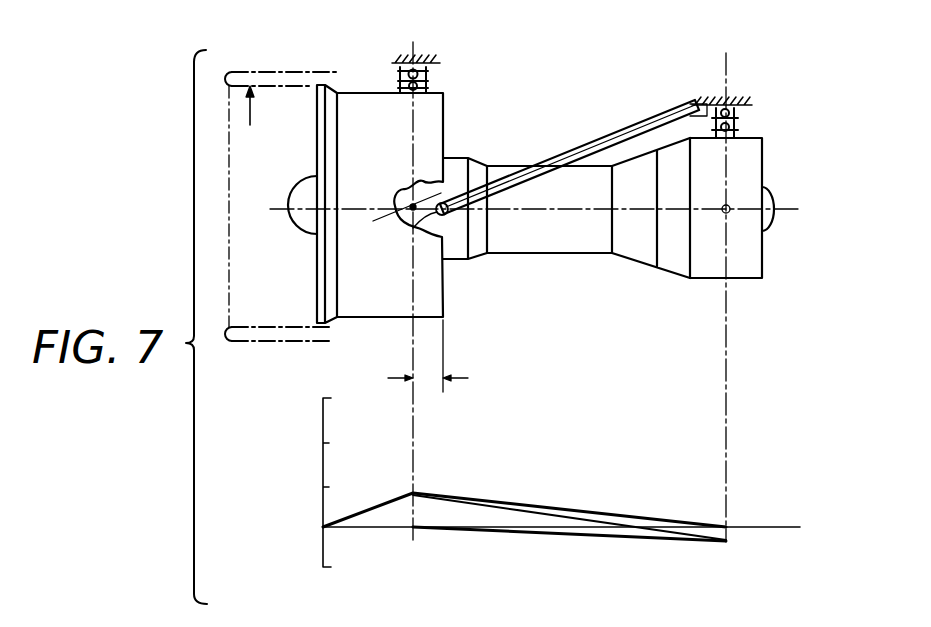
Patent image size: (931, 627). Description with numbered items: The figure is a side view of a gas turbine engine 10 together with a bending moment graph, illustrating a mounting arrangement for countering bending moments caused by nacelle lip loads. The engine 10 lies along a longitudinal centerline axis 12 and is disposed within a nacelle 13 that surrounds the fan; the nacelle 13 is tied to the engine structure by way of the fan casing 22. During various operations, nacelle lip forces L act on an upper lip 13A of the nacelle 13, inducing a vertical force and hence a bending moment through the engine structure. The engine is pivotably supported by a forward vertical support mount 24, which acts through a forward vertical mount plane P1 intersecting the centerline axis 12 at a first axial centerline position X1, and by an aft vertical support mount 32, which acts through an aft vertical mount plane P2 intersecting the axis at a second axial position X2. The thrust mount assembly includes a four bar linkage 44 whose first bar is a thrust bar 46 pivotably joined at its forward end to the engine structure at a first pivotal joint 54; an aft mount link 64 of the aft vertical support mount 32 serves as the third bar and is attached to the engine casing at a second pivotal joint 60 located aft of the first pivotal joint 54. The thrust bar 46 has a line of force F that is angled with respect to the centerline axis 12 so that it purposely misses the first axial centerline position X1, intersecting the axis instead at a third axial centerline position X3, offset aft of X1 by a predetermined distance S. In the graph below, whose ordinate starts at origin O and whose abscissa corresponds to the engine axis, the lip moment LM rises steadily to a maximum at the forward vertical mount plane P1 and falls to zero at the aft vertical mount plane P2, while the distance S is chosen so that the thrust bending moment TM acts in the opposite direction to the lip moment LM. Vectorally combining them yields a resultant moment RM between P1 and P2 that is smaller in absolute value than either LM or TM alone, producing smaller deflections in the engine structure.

The gas turbine engine 10 is at (378, 319).
The longitudinal centerline axis 12 is at (746, 207).
The nacelle 13 is at (300, 71).
The lip 13A is at (230, 84).
The fan casing 22 is at (396, 56).
The forward vertical support mount 24 is at (432, 81).
The aft vertical support mount 32 is at (750, 120).
The four bar linkage 44 is at (589, 205).
The thrust bar 46 is at (679, 110).
The first pivotal joint 54 is at (415, 229).
The second pivotal joint 60 is at (739, 128).
The aft mount link 64 is at (735, 111).
The forward vertical mount plane P1 is at (413, 42).
The aft vertical mount plane P2 is at (727, 73).
The first axial centerline position X1 is at (409, 195).
The second axial position X2 is at (729, 214).
The third axial centerline position X3 is at (446, 215).
The line of force F is at (628, 127).
The nacelle lip forces L is at (252, 110).
The distance S is at (441, 358).
The origin O is at (549, 482).
The lip moment LM is at (550, 506).
The resultant moment RM is at (597, 517).
The thrust bending moment TM is at (612, 537).